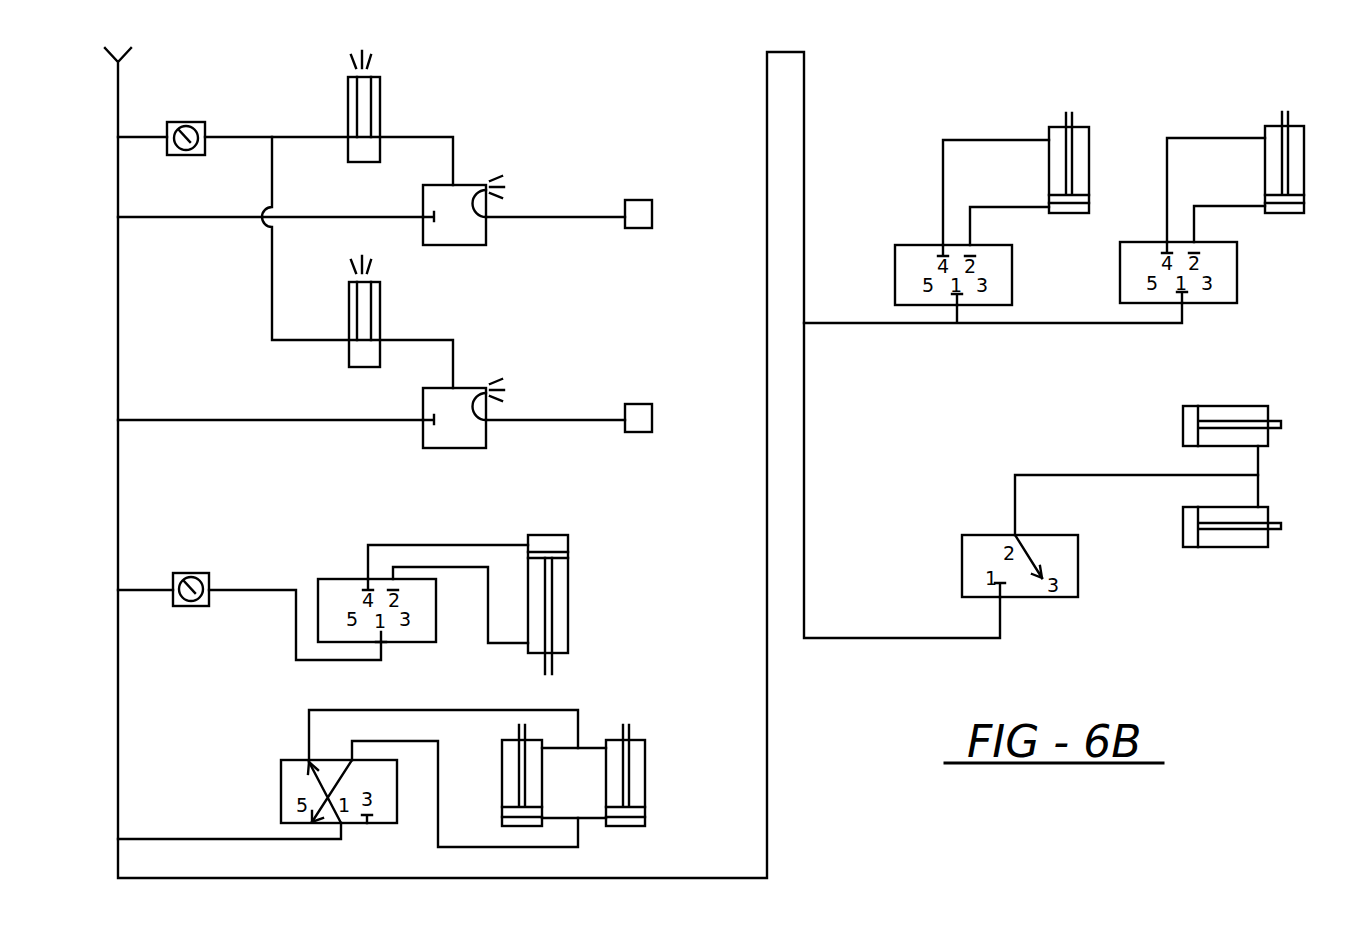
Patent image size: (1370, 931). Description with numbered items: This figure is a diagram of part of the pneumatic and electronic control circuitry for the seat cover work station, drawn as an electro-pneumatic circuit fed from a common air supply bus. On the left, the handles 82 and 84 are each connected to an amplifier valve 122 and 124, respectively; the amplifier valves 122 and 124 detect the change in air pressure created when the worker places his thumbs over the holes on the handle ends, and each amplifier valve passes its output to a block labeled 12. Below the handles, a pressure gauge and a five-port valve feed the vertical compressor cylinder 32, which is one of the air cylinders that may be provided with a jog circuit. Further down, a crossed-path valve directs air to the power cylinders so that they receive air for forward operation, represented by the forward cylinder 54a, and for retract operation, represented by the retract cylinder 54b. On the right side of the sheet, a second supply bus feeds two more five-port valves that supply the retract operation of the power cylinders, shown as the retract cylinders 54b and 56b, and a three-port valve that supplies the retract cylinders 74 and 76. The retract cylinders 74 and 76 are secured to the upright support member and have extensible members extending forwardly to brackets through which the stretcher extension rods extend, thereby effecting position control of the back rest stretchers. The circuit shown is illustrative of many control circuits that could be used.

The controller 12 is at (569, 316).
The vertical compressor cylinder 32 is at (568, 572).
The power cylinder forward operation 54a is at (502, 794).
The power cylinder retract operation 54b is at (645, 793).
The power cylinder retract operation 56b is at (1304, 178).
The retract cylinder 74 is at (1222, 406).
The retract cylinder 76 is at (1233, 548).
The handle 82 is at (381, 100).
The handle 84 is at (381, 320).
The amplifier valve 122 is at (470, 246).
The amplifier valve 124 is at (442, 449).